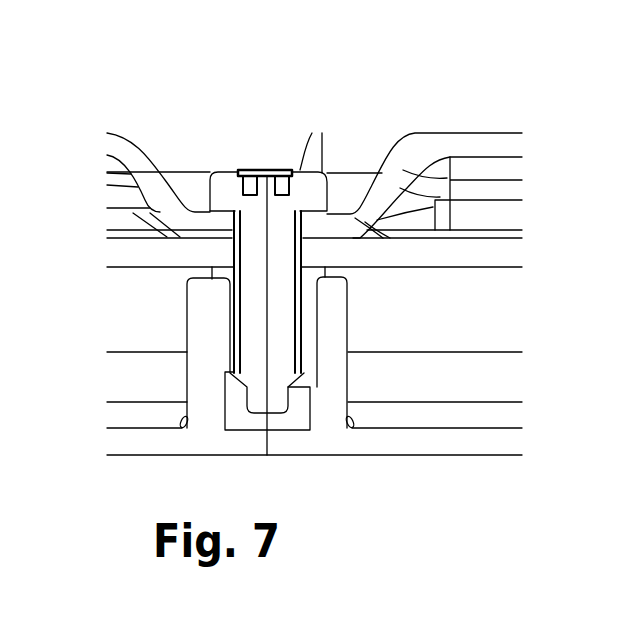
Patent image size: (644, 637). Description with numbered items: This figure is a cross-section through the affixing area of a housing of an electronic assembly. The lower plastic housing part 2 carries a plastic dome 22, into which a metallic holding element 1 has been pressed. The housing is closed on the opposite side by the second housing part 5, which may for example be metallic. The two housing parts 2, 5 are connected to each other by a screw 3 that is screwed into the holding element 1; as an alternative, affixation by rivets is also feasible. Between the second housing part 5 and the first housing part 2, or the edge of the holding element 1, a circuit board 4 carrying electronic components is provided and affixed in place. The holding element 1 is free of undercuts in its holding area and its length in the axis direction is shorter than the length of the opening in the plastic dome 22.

The holding element 1 is at (315, 296).
The plastic housing part 2 is at (448, 455).
The screw 3 is at (226, 180).
The circuit board 4 is at (478, 254).
The second housing part 5 is at (442, 132).
The plastic dome 22 is at (346, 337).